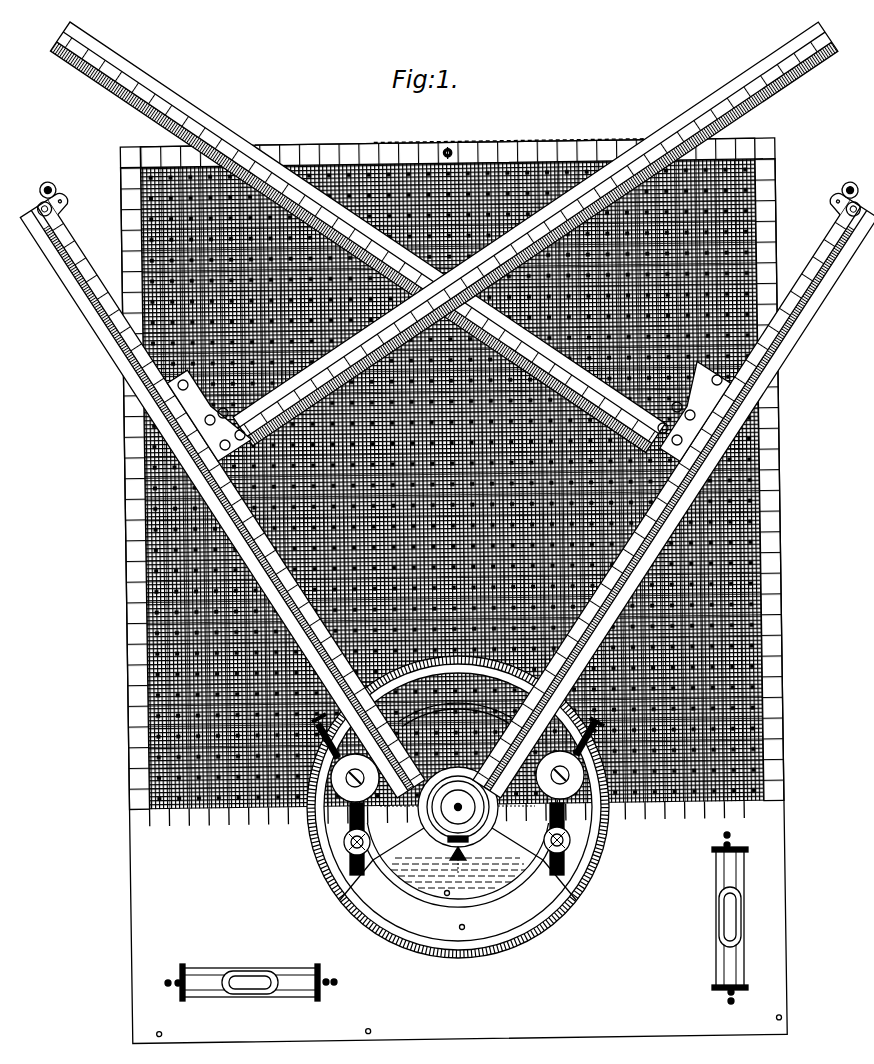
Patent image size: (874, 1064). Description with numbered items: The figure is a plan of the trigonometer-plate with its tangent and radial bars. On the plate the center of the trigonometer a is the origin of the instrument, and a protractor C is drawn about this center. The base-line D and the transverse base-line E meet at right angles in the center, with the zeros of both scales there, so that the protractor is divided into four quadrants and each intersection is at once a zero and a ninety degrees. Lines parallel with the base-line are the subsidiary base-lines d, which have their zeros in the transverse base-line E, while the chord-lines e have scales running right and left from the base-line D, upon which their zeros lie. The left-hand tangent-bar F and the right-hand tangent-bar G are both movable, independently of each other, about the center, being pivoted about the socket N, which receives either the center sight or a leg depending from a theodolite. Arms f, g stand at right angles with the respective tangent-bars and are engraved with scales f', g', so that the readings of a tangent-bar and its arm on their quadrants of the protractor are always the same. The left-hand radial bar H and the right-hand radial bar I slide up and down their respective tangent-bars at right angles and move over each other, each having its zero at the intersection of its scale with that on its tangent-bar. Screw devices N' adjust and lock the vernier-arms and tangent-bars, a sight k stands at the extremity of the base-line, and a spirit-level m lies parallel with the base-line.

The transverse base-line E is at (446, 581).
The chord-lines e is at (125, 262).
The subsidiary base-lines d is at (163, 148).
The sight at the extremity of the base-line k is at (451, 148).
The base-line D is at (457, 156).
The protractor C is at (458, 807).
The socket N is at (458, 833).
The center of the trigonometer a is at (460, 799).
The screw devices N' is at (458, 759).
The left-hand arm f is at (367, 833).
The scale of left-hand arm f' is at (357, 862).
The right-hand arm g is at (546, 831).
The scale of right-hand arm g' is at (557, 860).
The left-hand tangent-bar F is at (225, 486).
The right-hand tangent-bar G is at (666, 476).
The right-hand radial bar I is at (243, 142).
The left-hand radial bar H is at (663, 129).
The spirit-level m is at (243, 970).